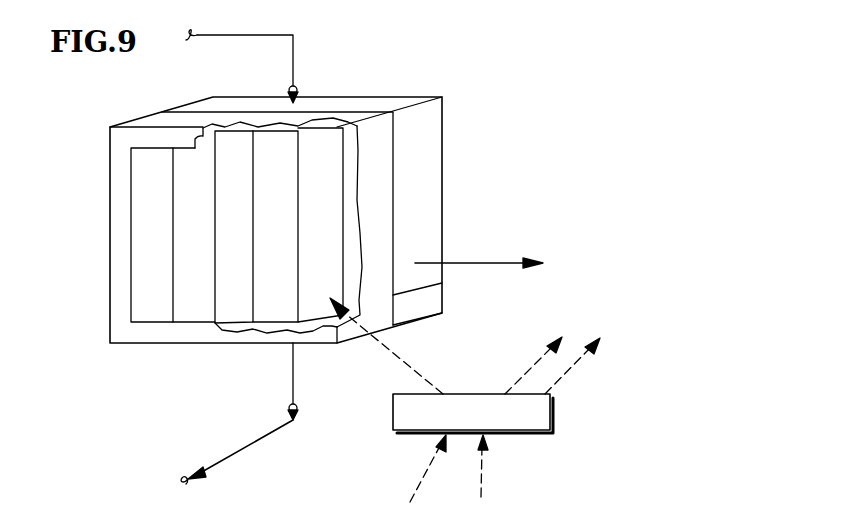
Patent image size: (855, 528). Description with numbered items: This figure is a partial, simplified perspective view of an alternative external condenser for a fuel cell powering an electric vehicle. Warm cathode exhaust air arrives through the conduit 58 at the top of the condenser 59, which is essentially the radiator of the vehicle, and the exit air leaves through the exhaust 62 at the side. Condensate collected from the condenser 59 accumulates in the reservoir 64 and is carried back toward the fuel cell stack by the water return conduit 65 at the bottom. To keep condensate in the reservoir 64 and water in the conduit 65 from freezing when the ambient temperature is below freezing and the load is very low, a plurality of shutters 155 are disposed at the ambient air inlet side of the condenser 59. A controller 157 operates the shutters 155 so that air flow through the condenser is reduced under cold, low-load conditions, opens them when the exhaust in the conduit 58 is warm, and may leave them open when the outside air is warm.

The conduit 58 is at (293, 70).
The condenser 59 is at (387, 108).
The exhaust 62 is at (485, 264).
The reservoir 64 is at (415, 303).
The water return conduit 65 is at (242, 447).
The shutters 155 is at (230, 247).
The controller 157 is at (393, 418).